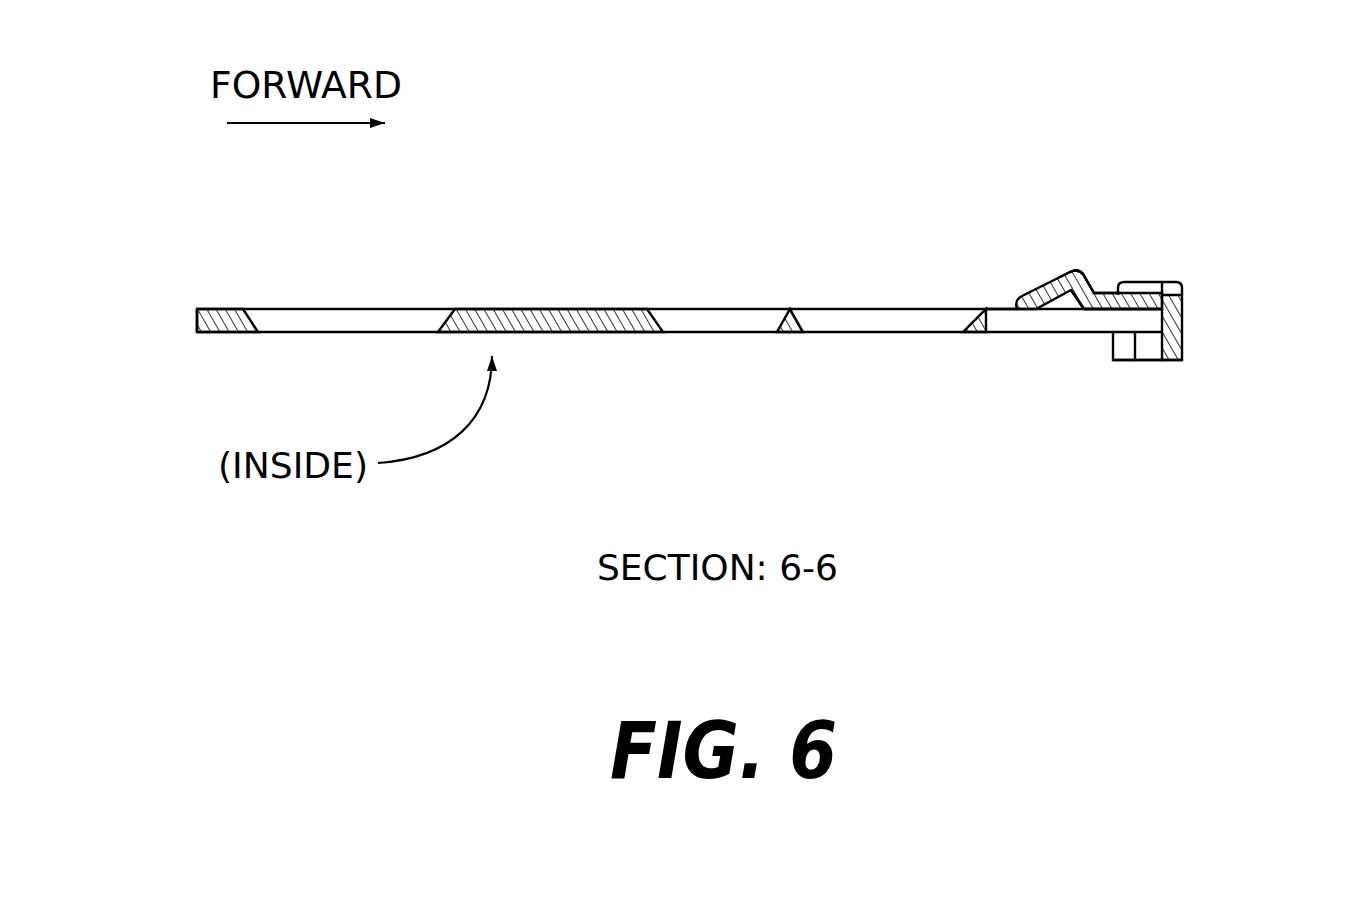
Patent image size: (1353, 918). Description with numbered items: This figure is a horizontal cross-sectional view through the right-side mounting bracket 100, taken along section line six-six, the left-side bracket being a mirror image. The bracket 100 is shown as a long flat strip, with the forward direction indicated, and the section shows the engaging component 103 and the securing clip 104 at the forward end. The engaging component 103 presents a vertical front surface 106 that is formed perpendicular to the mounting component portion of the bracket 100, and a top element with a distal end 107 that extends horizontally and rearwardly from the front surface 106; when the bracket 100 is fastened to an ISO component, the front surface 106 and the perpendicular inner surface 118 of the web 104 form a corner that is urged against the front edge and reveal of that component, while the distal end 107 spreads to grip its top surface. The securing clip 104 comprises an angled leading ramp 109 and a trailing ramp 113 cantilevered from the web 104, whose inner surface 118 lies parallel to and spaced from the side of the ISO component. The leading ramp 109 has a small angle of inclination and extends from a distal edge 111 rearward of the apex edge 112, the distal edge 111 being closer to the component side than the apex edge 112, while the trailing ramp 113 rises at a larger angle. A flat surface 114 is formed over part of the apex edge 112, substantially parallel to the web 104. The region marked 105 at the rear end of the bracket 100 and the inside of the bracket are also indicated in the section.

The right-side mounting bracket 100 is at (590, 305).
The engaging component 103 is at (1183, 328).
The securing clip 104 is at (1135, 295).
The forward edge of panel 105 is at (257, 305).
The vertical front surface 106 is at (1157, 347).
The distal end of top element 107 is at (1126, 342).
The leading ramp 109 is at (1028, 290).
The distal edge 111 is at (1012, 312).
The apex edge 112 is at (1077, 272).
The trailing ramp 113 is at (1090, 278).
The flat surface 114 is at (1060, 268).
The inner surface of web 118 is at (1113, 312).